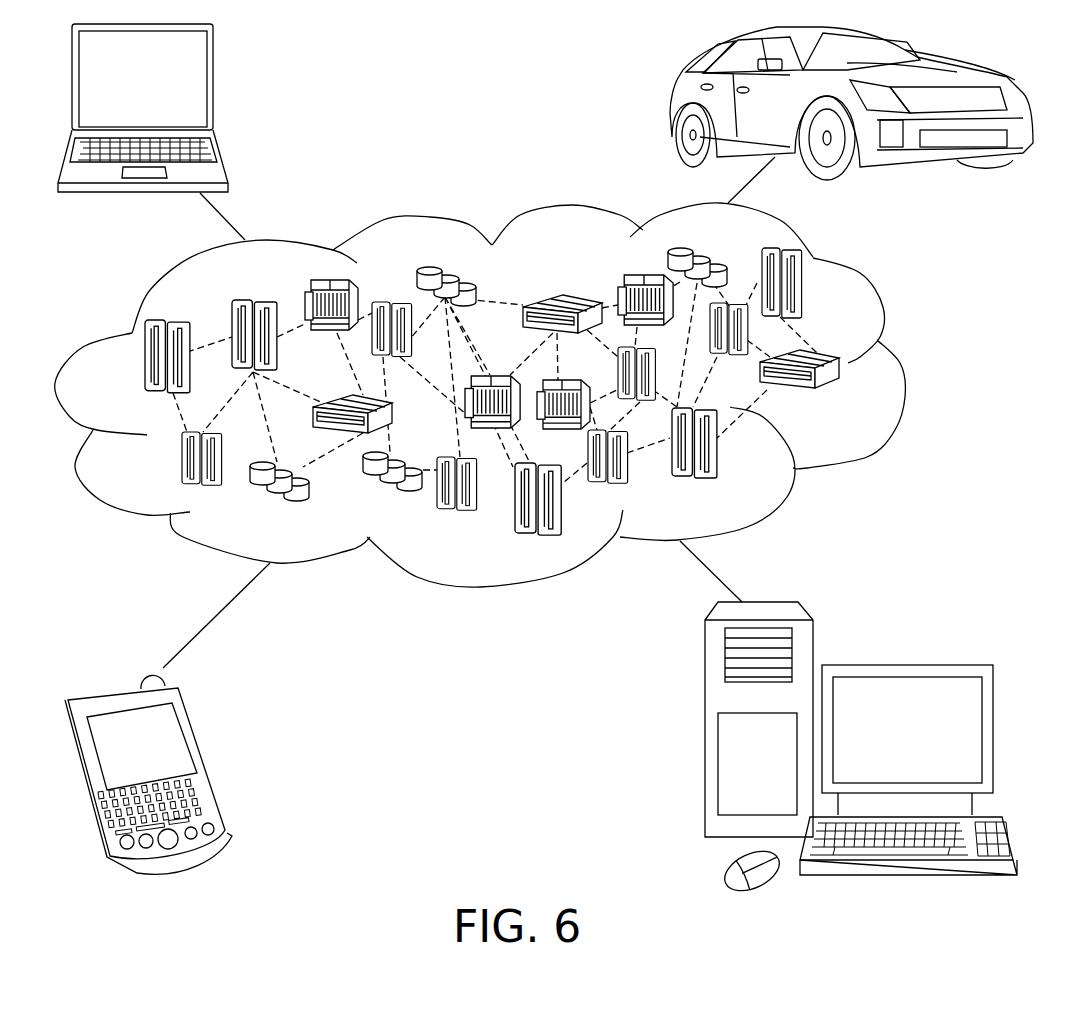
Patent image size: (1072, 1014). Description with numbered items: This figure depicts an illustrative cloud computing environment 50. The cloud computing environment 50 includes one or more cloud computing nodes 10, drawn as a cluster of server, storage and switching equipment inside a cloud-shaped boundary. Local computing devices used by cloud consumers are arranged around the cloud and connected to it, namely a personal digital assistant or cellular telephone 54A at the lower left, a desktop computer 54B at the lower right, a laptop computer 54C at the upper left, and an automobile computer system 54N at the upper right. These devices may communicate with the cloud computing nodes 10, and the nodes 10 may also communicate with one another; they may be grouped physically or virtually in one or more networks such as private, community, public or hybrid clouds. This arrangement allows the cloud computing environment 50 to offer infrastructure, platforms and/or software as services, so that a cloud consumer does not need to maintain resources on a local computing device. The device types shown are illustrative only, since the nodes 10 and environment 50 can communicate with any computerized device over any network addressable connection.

The cloud computing node 10 is at (845, 400).
The cloud computing environment 50 is at (512, 395).
The personal digital assistant or cellular telephone 54A is at (207, 760).
The desktop computer 54B is at (907, 663).
The laptop computer 54C is at (219, 88).
The automobile computer system 54N is at (677, 105).